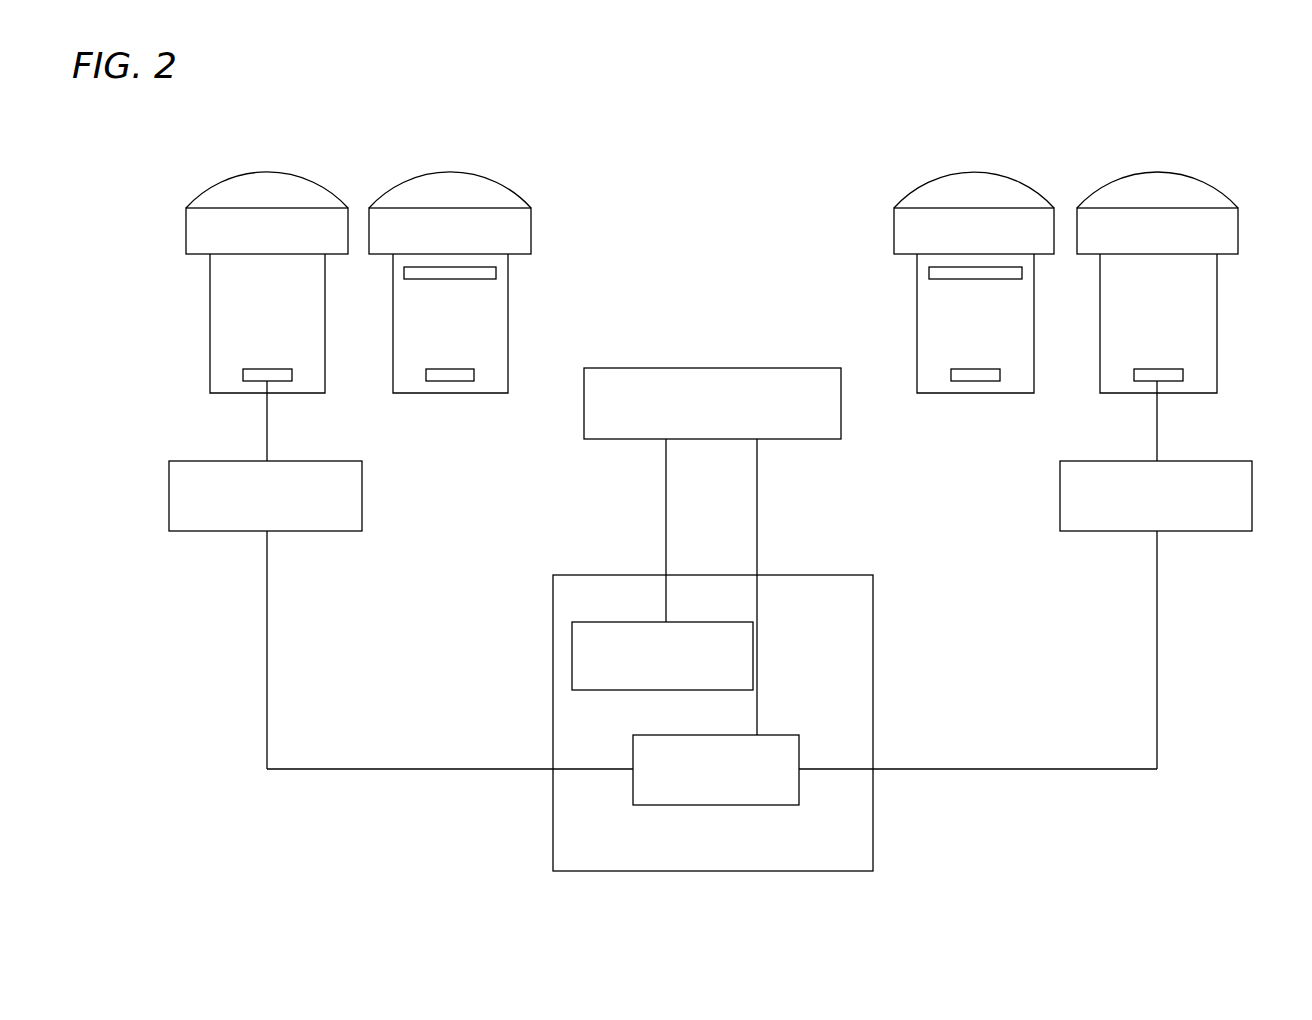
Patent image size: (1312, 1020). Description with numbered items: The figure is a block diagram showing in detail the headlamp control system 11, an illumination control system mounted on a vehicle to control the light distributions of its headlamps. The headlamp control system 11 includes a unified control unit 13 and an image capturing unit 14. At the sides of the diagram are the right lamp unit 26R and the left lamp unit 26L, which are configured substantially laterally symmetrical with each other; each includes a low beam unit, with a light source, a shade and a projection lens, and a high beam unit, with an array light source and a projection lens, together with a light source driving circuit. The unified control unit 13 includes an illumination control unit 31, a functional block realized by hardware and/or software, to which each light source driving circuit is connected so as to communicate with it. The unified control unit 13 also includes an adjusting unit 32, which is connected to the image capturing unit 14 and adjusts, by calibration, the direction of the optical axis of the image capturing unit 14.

The headlamp control system 11 is at (727, 170).
The unified control unit 13 is at (873, 829).
The image capturing unit 14 is at (714, 368).
The left lamp unit 26L is at (374, 156).
The right lamp unit 26R is at (1082, 159).
The illumination control unit 31 is at (777, 734).
The adjusting unit 32 is at (620, 692).